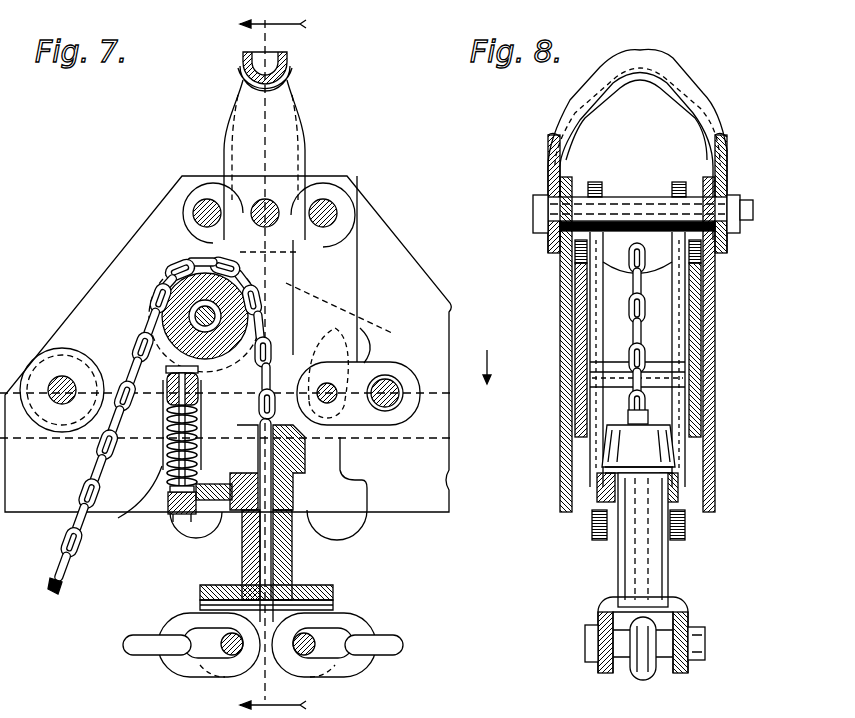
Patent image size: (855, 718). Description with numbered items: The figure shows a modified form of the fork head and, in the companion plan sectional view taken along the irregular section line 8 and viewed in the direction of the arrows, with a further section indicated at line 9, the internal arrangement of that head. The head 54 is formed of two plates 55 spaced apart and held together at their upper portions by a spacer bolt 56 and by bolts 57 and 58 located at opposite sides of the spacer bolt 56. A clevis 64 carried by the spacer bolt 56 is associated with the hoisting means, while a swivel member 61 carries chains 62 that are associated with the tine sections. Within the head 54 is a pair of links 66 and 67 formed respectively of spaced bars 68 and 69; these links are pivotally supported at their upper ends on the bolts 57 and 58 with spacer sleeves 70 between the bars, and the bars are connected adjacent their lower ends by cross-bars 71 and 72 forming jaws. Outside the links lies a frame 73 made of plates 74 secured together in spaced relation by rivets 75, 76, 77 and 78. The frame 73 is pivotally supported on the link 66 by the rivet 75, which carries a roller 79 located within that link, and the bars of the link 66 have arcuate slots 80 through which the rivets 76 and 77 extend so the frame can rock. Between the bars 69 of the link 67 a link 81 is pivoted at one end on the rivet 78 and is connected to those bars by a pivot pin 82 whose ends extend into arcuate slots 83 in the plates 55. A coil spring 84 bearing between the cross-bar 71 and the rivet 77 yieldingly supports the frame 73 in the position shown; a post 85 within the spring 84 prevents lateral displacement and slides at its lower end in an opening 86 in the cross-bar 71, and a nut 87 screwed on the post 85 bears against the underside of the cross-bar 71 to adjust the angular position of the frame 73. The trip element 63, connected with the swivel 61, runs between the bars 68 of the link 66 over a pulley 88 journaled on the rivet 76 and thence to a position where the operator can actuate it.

In FIG. 7, the section line 8 is at (273, 359).
In FIG. 7, the section line 9 is at (486, 390).
In FIG. 7, the head 54 is at (405, 276).
In FIG. 8, the head 54 is at (714, 340).
In FIG. 7, the plates 55 is at (425, 296).
In FIG. 8, the plates 55 is at (566, 420).
In FIG. 7, the spacer bolt 56 is at (268, 205).
In FIG. 8, the spacer bolt 56 is at (637, 200).
In FIG. 7, the bolt 57 is at (199, 208).
In FIG. 7, the bolt 58 is at (333, 205).
In FIG. 7, the swivel member 61 is at (290, 572).
In FIG. 8, the swivel member 61 is at (632, 570).
In FIG. 7, the chains 62 is at (180, 616).
In FIG. 8, the chains 62 is at (650, 680).
In FIG. 7, the trip element 63 is at (88, 486).
In FIG. 8, the trip element 63 is at (652, 312).
In FIG. 7, the clevis 64 is at (285, 100).
In FIG. 8, the clevis 64 is at (688, 100).
In FIG. 7, the link 66 is at (152, 269).
In FIG. 8, the link 66 is at (672, 240).
In FIG. 7, the link 67 is at (346, 244).
In FIG. 7, the bars 68 is at (122, 290).
In FIG. 7, the bars 69 is at (358, 500).
In FIG. 7, the spacer sleeves 70 is at (194, 216).
In FIG. 7, the cross-bar 71 is at (220, 498).
In FIG. 8, the cross-bar 71 is at (605, 488).
In FIG. 7, the cross-bar 72 is at (300, 492).
In FIG. 7, the frame 73 is at (388, 348).
In FIG. 8, the frame 73 is at (580, 326).
In FIG. 7, the plates 74 is at (400, 355).
In FIG. 8, the plates 74 is at (582, 353).
In FIG. 7, the rivet 75 is at (61, 404).
In FIG. 7, the rivet 76 is at (165, 312).
In FIG. 7, the rivet 77 is at (167, 392).
In FIG. 7, the rivet 78 is at (396, 392).
In FIG. 7, the roller 79 is at (50, 370).
In FIG. 7, the arcuate slot 80 is at (140, 333).
In FIG. 7, the link 81 is at (398, 408).
In FIG. 7, the pivot pin 82 is at (327, 384).
In FIG. 7, the arcuate slots 83 is at (362, 330).
In FIG. 7, the coil spring 84 is at (168, 440).
In FIG. 7, the post 85 is at (162, 468).
In FIG. 7, the opening 86 is at (160, 493).
In FIG. 7, the nut 87 is at (158, 524).
In FIG. 7, the pulley 88 is at (176, 281).
In FIG. 8, the pulley 88 is at (610, 310).